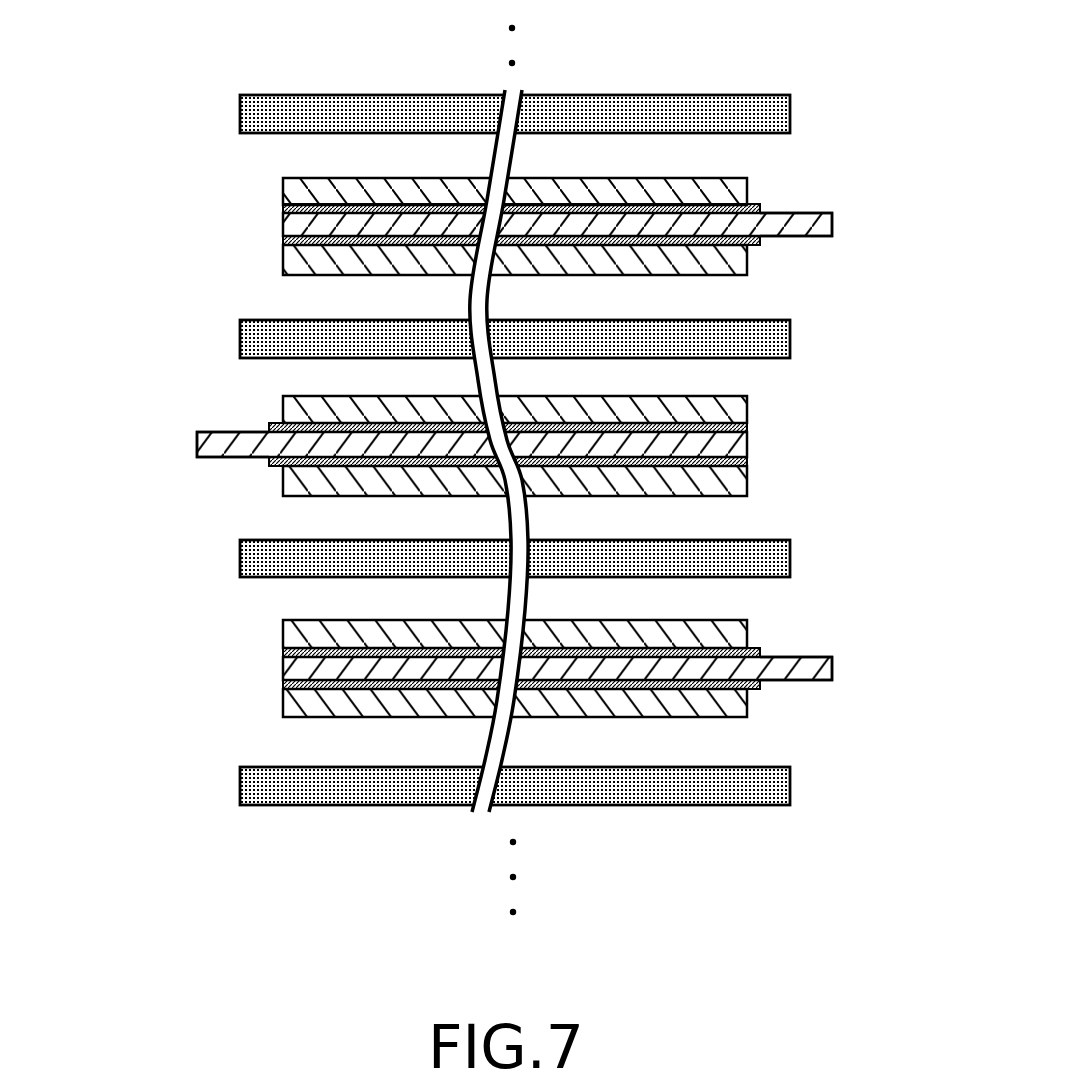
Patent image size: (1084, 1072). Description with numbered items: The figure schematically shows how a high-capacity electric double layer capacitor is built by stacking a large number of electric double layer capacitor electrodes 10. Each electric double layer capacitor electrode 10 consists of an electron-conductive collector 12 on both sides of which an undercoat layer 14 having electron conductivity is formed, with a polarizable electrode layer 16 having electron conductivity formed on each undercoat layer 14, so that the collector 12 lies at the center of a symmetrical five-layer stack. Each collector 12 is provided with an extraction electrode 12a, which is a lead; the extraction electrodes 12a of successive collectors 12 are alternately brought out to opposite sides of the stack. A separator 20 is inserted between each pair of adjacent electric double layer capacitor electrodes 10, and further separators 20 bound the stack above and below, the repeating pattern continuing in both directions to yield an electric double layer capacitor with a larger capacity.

The electric double layer capacitor electrode 10 is at (137, 120).
The collector 12 is at (283, 225).
The extraction electrode 12a is at (832, 223).
The undercoat layer 14 is at (283, 208).
The polarizable electrode layer 16 is at (283, 192).
The separator 20 is at (790, 112).